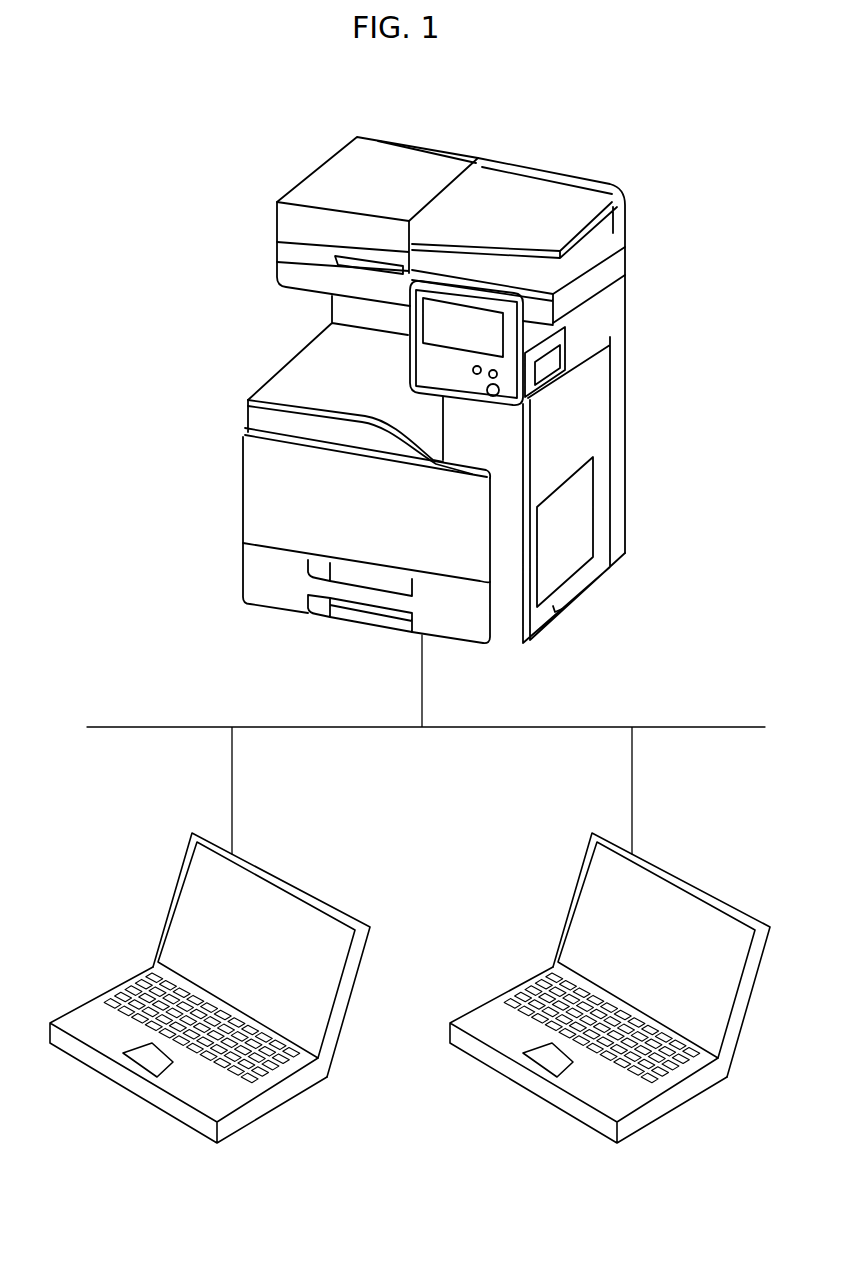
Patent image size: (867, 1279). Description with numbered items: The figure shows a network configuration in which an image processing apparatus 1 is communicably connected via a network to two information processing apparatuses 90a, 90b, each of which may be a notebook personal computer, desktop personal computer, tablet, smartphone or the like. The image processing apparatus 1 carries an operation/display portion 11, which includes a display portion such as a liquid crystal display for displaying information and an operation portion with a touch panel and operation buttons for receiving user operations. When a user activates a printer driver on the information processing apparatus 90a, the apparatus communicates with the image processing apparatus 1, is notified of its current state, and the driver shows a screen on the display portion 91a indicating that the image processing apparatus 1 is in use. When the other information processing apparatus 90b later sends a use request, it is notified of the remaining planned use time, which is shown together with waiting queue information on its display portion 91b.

The image processing apparatus 1 is at (434, 368).
The operation/display portion 11 is at (437, 337).
The information processing apparatus 90a is at (212, 975).
The information processing apparatus 90b is at (611, 975).
The display portion 91a is at (183, 918).
The display portion 91b is at (639, 955).